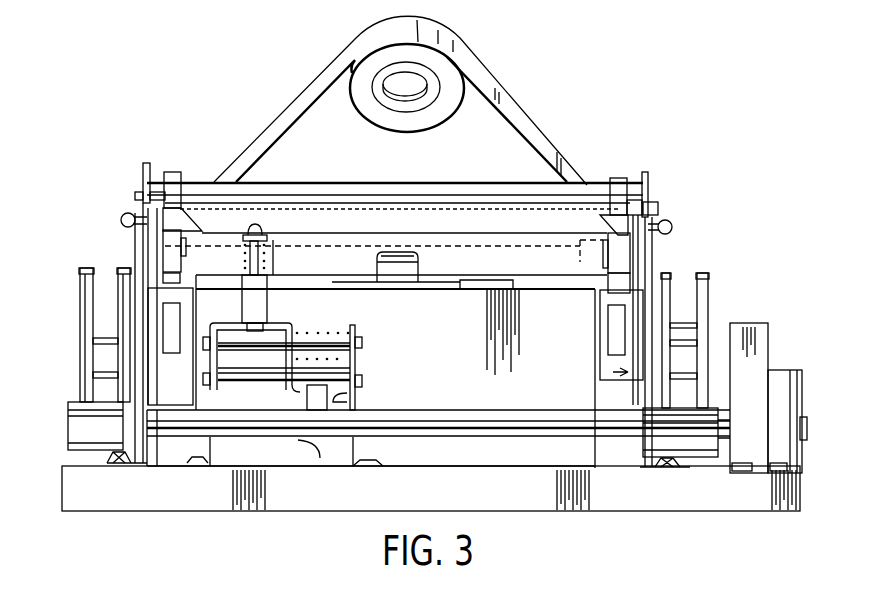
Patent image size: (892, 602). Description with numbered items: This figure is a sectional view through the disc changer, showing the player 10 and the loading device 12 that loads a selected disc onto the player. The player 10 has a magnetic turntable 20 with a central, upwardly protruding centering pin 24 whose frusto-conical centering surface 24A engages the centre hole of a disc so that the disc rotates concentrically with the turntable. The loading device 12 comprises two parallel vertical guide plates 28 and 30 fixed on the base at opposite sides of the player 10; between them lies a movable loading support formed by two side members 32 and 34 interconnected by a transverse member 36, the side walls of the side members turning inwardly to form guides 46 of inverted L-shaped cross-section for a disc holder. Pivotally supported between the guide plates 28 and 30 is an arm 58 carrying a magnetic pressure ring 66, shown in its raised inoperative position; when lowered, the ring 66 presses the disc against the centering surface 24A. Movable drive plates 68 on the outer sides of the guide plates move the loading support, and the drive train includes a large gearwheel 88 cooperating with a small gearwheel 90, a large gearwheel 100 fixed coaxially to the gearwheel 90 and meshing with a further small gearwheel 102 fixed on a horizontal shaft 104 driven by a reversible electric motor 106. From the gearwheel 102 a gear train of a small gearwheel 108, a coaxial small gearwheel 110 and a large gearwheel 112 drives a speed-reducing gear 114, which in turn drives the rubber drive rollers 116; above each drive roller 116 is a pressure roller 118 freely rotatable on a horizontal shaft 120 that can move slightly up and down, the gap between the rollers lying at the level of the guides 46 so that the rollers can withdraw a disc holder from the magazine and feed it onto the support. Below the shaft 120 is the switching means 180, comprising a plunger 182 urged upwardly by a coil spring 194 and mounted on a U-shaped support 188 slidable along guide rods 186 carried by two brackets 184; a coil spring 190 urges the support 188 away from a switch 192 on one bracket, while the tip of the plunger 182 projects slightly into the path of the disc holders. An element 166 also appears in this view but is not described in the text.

The player 10 is at (507, 288).
The loading device 12 is at (100, 218).
The turntable 20 is at (463, 280).
The centering pin 24 is at (403, 250).
The frusto-conical centering surface 24A is at (420, 270).
The guide plate 28 is at (135, 177).
The guide plate 30 is at (650, 185).
The side member 32 is at (185, 250).
The side member 34 is at (582, 242).
The transverse member 36 is at (284, 327).
The guide 46 is at (187, 228).
The arm 58 is at (522, 117).
The magnetic pressure ring 66 is at (432, 78).
The drive plate 68 is at (137, 235).
The large gearwheel 88 is at (128, 267).
The small gearwheel 90 is at (100, 340).
The large gearwheel 100 is at (83, 295).
The further small gearwheel 102 is at (72, 402).
The horizontal shaft 104 is at (450, 420).
The reversible electric motor 106 is at (782, 387).
The small gearwheel 108 is at (82, 452).
The small gearwheel 110 is at (133, 437).
The large gearwheel 112 is at (125, 290).
The speed-reducing gear 114 is at (168, 360).
The drive roller 116 is at (182, 255).
The pressure roller 118 is at (173, 178).
The horizontal shaft 120 is at (200, 187).
The lower plate 166 is at (327, 385).
The switching means 180 is at (378, 335).
The plunger 182 is at (258, 228).
The bracket 184 is at (347, 393).
The guide rod 186 is at (333, 342).
The U-shaped support 188 is at (275, 326).
The coil spring 190 is at (355, 360).
The switch 192 is at (300, 456).
The coil spring 194 is at (293, 243).